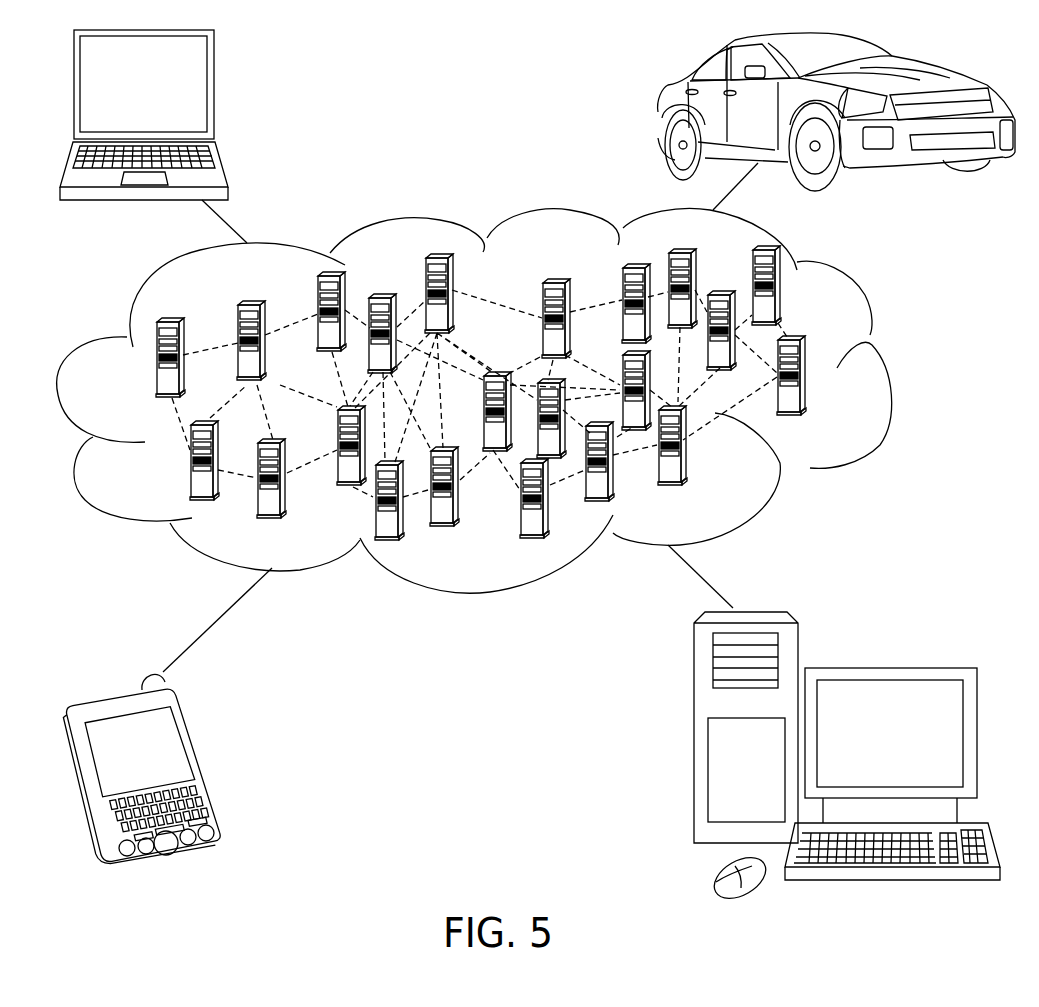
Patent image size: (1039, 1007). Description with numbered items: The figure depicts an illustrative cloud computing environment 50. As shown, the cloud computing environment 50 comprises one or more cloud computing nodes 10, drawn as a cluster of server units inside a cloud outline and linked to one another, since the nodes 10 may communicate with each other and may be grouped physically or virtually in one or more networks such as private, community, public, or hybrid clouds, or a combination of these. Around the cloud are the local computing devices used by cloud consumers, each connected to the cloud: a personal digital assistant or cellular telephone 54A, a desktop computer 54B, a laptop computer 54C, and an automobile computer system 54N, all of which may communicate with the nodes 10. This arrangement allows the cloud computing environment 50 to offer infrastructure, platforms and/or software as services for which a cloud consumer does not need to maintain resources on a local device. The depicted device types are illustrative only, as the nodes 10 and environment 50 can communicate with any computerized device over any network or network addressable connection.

The cloud computing node 10 is at (836, 406).
The cloud computing environment 50 is at (888, 372).
The personal digital assistant or cellular telephone 54A is at (205, 763).
The desktop computer 54B is at (887, 667).
The laptop computer 54C is at (214, 92).
The automobile computer system 54N is at (662, 108).